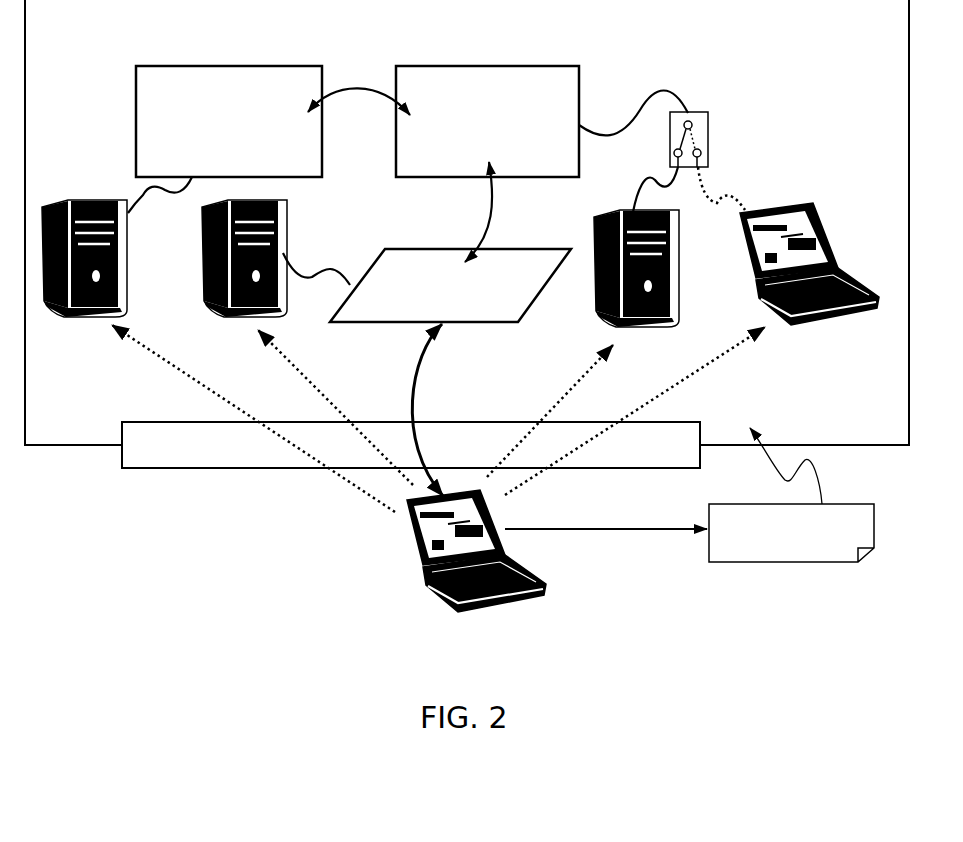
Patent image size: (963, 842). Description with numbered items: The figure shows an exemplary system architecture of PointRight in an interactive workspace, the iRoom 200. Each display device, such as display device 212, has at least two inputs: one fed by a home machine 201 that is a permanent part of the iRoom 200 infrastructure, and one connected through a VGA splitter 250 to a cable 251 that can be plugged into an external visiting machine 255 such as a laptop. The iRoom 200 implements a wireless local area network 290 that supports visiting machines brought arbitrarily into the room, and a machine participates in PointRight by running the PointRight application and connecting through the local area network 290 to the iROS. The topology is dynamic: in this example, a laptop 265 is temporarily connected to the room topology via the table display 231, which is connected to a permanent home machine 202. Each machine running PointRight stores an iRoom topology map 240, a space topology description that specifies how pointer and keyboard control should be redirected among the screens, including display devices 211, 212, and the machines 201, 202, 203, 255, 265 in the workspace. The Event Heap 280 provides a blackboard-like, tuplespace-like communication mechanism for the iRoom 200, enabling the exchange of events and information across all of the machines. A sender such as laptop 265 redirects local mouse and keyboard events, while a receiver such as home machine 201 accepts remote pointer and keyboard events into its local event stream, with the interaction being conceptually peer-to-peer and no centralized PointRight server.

The iRoom 200 is at (867, 621).
The home machine 201 is at (657, 268).
The permanent home machine 202 is at (264, 258).
The machine 203 is at (105, 258).
The display device 211 is at (229, 121).
The display device 212 is at (487, 121).
The table display 231 is at (450, 285).
The iRoom topology map 240 is at (791, 495).
The VGA splitter 250 is at (722, 115).
The cable 251 is at (742, 182).
The visiting machine 255 is at (809, 274).
The laptop 265 is at (464, 551).
The Event Heap 280 is at (411, 445).
The wireless local area network 290 is at (467, 222).